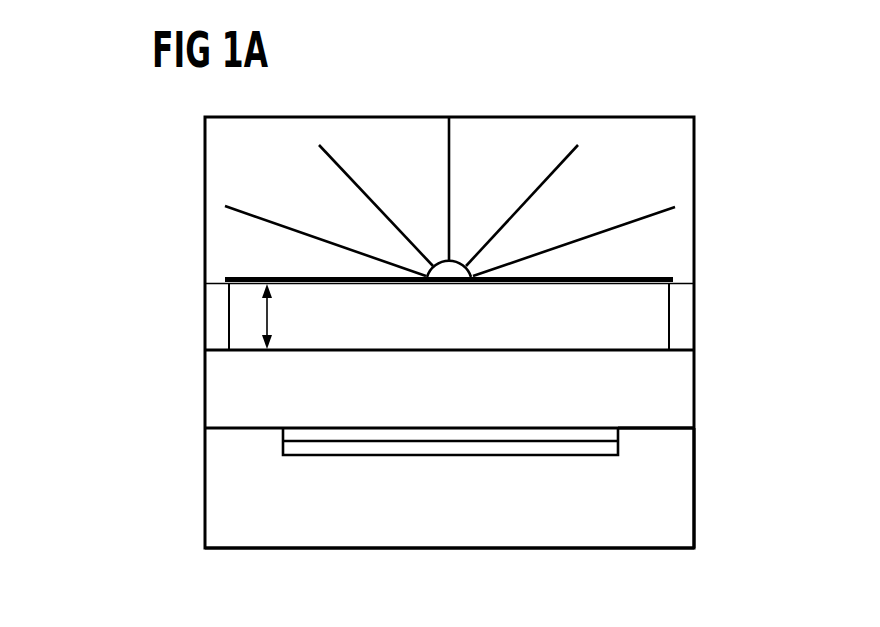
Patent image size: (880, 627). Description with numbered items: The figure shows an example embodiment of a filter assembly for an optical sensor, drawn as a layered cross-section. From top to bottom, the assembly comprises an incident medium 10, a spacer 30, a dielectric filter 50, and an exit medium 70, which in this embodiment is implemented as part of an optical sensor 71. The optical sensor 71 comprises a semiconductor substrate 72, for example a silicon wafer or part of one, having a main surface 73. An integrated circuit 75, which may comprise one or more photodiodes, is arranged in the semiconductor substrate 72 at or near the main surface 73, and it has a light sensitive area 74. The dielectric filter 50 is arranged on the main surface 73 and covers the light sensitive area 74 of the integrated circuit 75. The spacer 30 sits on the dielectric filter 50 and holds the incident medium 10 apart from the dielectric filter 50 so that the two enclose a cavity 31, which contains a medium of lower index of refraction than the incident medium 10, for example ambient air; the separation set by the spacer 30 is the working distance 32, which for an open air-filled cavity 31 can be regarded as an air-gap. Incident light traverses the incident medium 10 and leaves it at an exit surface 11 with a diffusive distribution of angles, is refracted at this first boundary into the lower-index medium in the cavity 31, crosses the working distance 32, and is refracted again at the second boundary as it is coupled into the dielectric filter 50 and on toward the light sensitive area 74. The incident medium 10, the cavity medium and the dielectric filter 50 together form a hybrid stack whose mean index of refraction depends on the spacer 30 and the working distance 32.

The incident medium 10 is at (685, 202).
The exit surface 11 is at (497, 285).
The spacer 30 is at (215, 318).
The cavity 31 is at (655, 322).
The working distance 32 is at (277, 317).
The dielectric filter 50 is at (215, 390).
The exit medium 70 is at (215, 490).
The optical sensor 71 is at (607, 549).
The semiconductor substrate 72 is at (448, 540).
The main surface 73 is at (653, 427).
The light sensitive area 74 is at (327, 435).
The integrated circuit 75 is at (583, 445).